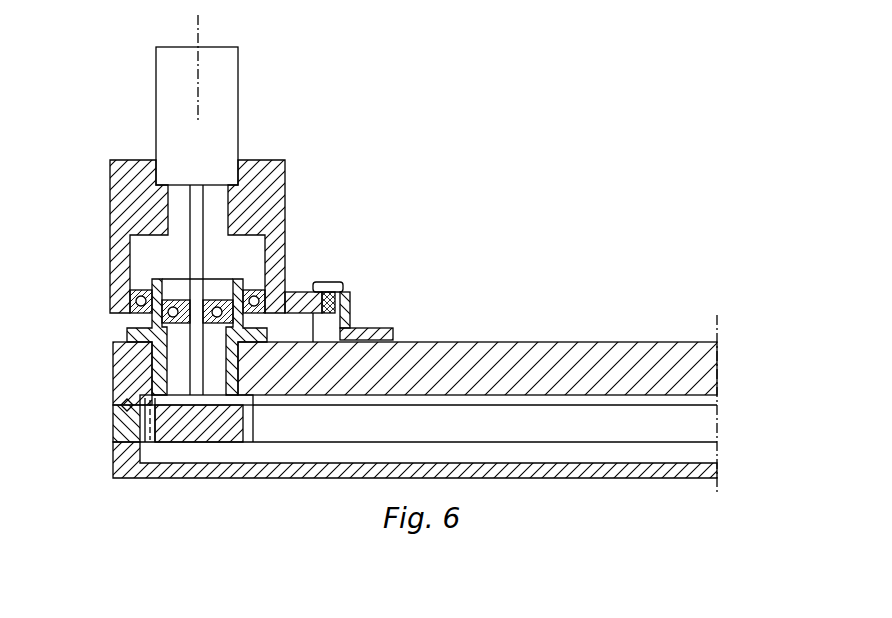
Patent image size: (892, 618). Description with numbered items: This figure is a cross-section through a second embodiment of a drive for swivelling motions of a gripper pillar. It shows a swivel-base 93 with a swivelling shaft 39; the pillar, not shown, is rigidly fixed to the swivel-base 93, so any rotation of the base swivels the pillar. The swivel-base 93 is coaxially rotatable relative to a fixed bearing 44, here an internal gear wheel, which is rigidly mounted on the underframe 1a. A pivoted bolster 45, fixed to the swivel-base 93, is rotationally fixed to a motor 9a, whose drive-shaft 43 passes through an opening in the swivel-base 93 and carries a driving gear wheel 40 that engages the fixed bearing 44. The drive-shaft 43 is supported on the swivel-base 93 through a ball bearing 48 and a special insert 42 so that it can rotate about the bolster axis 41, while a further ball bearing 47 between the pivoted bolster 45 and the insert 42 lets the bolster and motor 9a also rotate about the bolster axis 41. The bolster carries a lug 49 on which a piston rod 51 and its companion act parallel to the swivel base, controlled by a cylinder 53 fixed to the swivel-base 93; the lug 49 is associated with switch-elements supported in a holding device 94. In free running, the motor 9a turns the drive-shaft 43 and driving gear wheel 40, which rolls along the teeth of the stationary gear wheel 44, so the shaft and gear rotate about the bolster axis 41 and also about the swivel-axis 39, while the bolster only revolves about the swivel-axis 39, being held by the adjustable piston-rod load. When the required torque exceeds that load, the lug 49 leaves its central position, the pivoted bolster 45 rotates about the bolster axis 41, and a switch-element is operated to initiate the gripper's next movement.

The bolster axis 41 is at (198, 25).
The motor 9a is at (222, 72).
The pivoted bolster 45 is at (258, 183).
The lug 49 is at (300, 292).
The piston rod 51 is at (330, 292).
The cylinder 53 is at (343, 283).
The holding device 94 is at (388, 328).
The swivel-base 93 is at (627, 340).
The swivelling shaft 39 is at (717, 417).
The underframe 1a is at (208, 472).
The fixed bearing 44 is at (117, 430).
The insert 42 is at (145, 343).
The ball bearing 47 is at (130, 297).
The ball bearing 48 is at (147, 313).
The drive-shaft 43 is at (192, 353).
The driving gear wheel 40 is at (162, 427).